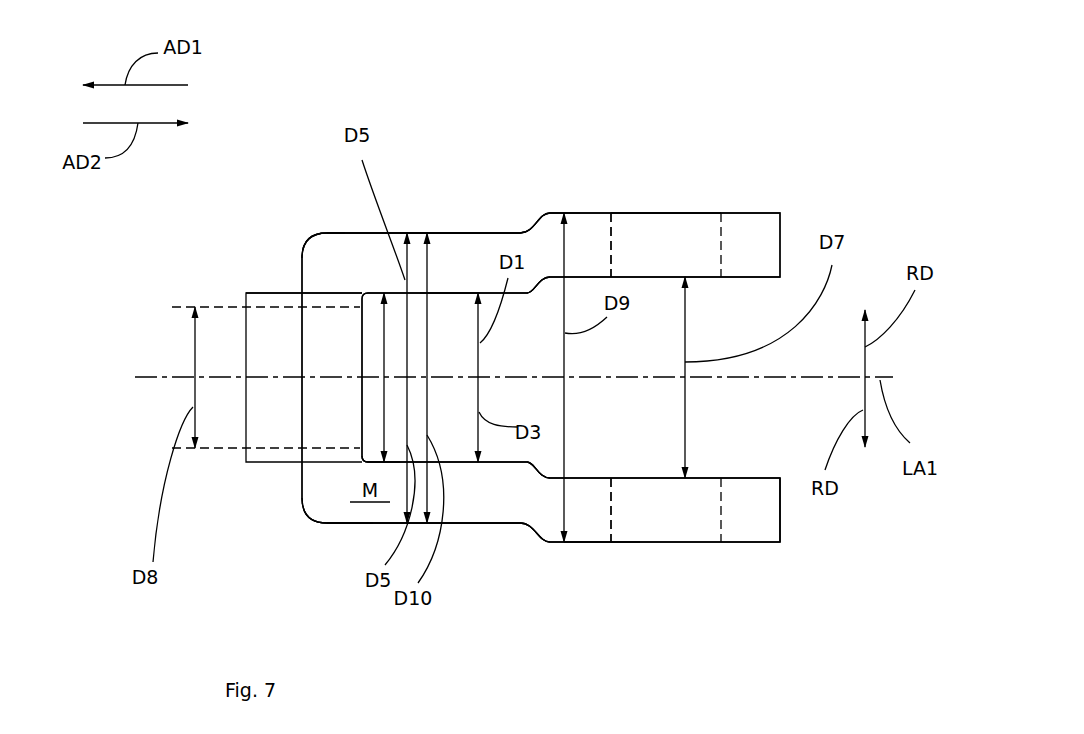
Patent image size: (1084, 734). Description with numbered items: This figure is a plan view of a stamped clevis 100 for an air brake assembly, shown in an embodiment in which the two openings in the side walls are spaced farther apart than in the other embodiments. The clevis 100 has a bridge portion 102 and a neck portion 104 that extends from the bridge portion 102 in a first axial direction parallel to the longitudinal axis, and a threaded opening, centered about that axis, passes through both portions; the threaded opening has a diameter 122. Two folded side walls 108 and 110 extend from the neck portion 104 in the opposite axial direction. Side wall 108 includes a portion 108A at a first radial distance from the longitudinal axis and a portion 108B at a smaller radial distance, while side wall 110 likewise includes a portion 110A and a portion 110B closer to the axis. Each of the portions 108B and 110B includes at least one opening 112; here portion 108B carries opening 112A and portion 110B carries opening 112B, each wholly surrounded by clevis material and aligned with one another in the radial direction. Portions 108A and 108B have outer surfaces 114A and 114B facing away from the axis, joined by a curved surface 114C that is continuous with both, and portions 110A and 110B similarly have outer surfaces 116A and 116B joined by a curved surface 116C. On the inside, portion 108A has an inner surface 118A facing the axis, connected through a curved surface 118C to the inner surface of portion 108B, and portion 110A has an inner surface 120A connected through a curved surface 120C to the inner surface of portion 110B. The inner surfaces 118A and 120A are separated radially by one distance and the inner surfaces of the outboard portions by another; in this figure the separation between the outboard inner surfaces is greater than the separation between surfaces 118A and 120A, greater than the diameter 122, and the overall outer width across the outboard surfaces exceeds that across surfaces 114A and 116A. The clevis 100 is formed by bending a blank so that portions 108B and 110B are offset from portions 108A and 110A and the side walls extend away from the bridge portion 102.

The stamped clevis 100 is at (795, 122).
The bridge portion 102 is at (323, 262).
The neck portion 104 is at (265, 293).
The folded sidewall 108 is at (508, 223).
The portion 108A is at (437, 228).
The portion 108B is at (643, 210).
The folded sidewall 110 is at (524, 532).
The portion 110A is at (452, 525).
The portion 110B is at (779, 545).
The opening 112 is at (692, 237).
The opening 112A is at (611, 251).
The opening 112B is at (610, 505).
The outer surface 114A is at (345, 232).
The outer surface 114B is at (560, 213).
The curved surface 114C is at (547, 214).
The outer surface 116A is at (373, 525).
The outer surface 116B is at (598, 543).
The curved surface 116C is at (533, 533).
The inner surface 118A is at (458, 297).
The curved surface 118C is at (543, 281).
The inner surface 120A is at (358, 448).
The curved surface 120C is at (540, 468).
The diameter 122 is at (385, 400).